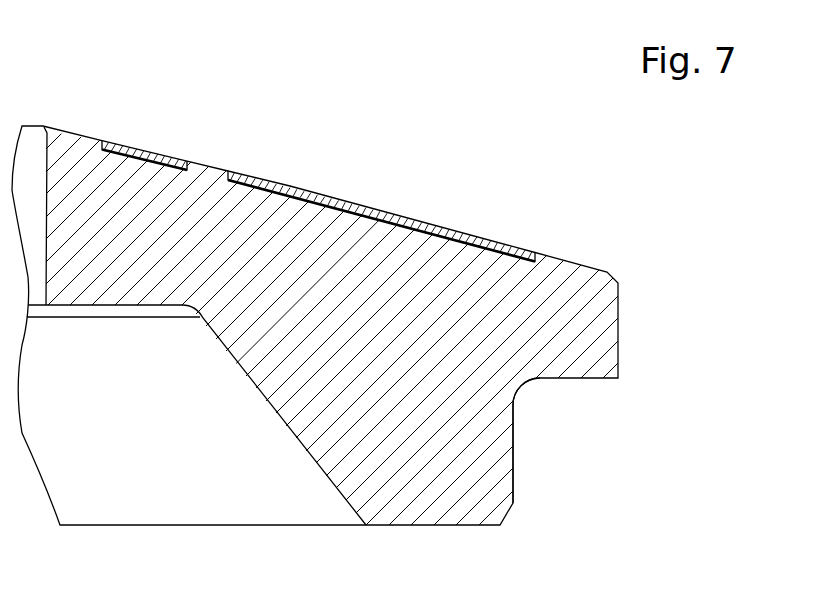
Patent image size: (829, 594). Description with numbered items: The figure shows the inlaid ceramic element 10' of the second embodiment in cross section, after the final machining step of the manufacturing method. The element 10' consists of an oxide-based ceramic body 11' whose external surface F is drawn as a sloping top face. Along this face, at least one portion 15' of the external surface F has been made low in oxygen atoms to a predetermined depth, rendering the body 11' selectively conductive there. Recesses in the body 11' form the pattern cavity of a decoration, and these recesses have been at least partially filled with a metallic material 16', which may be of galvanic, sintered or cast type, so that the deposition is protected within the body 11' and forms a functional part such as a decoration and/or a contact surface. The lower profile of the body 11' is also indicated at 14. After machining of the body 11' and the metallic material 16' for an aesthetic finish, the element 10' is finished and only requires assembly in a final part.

The inlaid ceramic element 10' is at (361, 325).
The body 11' is at (360, 327).
The groove 14 is at (478, 424).
The portion of the external surface 15' is at (318, 181).
The metallic material 16' is at (318, 191).
The external surface F is at (497, 172).